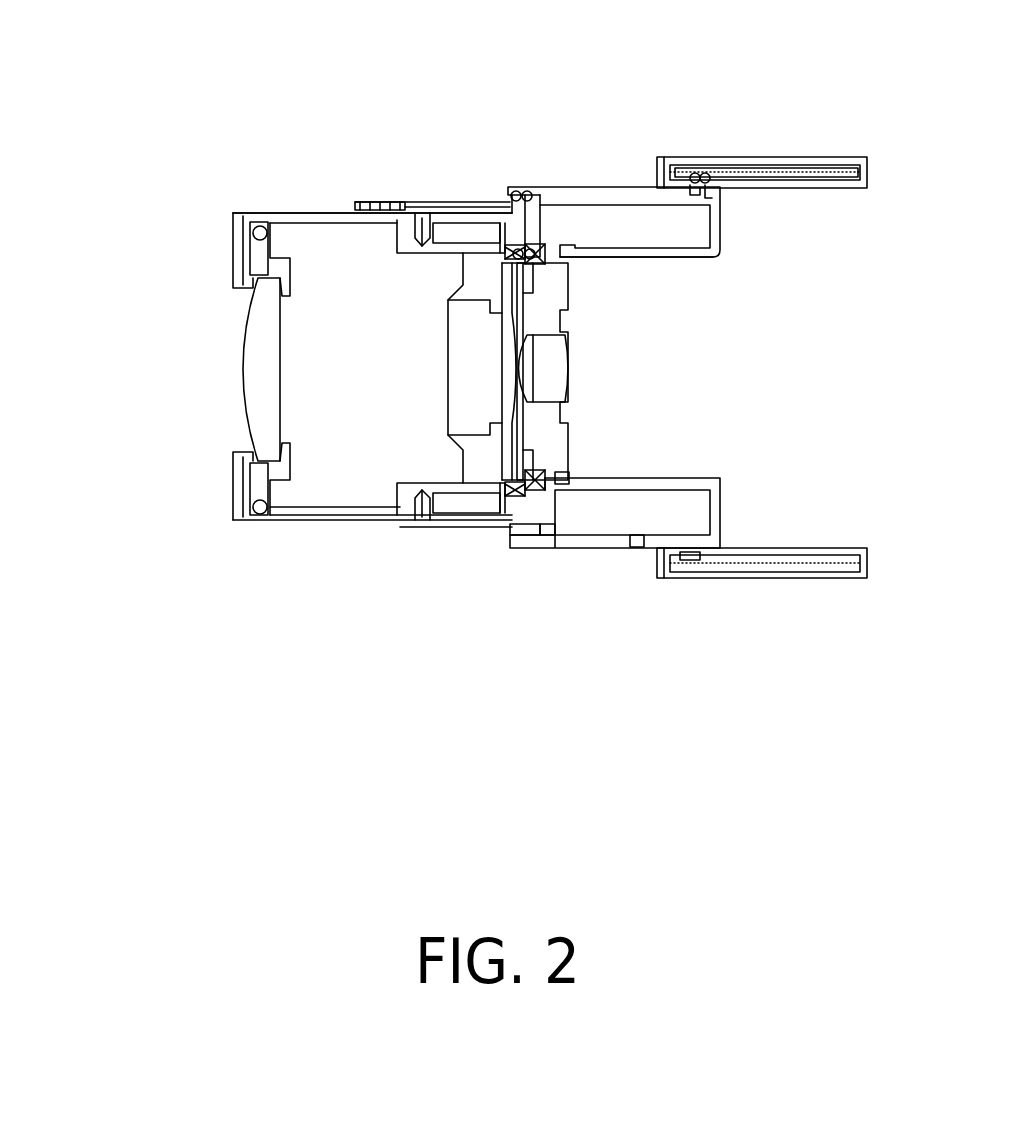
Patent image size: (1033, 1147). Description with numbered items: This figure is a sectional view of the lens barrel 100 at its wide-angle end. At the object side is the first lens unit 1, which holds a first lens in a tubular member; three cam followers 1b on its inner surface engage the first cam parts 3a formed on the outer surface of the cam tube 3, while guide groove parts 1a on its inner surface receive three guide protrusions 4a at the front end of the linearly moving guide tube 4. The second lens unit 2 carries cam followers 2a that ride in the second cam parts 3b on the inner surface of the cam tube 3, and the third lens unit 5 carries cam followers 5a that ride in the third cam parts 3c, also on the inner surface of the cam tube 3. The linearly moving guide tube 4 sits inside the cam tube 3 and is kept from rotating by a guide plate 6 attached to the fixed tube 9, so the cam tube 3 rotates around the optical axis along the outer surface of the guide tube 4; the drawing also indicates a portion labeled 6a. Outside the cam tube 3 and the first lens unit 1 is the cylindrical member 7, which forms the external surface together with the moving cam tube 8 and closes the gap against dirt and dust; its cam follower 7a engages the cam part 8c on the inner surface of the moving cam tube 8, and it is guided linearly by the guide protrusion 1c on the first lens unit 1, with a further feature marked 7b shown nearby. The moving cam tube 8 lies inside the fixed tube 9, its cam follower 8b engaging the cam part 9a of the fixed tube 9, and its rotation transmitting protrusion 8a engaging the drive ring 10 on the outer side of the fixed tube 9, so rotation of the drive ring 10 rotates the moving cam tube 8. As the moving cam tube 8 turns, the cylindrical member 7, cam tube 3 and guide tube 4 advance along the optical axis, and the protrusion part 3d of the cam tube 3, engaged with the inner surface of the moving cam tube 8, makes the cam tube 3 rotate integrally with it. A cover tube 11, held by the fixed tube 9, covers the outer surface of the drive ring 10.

The lens barrel 100 is at (137, 198).
The first lens unit 1 is at (263, 365).
The guide groove part 1a is at (305, 521).
The cam follower 1b is at (405, 530).
The guide protrusion 1c is at (393, 200).
The second lens unit 2 is at (325, 521).
The cam follower 2a is at (530, 197).
The cam tube 3 is at (457, 537).
The first cam part 3a is at (448, 520).
The second cam part 3b is at (517, 160).
The third cam part 3c is at (510, 523).
The protrusion part 3d is at (540, 210).
The linearly moving guide tube 4 is at (425, 252).
The guide protrusion 4a is at (393, 527).
The third lens unit 5 is at (560, 382).
The cam follower 5a is at (545, 466).
The guide plate 6 is at (720, 235).
The housing wall 6a is at (650, 257).
The cylindrical member 7 is at (355, 205).
The cam follower 7a is at (520, 552).
The adhesive 7b is at (395, 109).
The moving cam tube 8 is at (600, 190).
The rotation transmitting protrusion 8a is at (718, 173).
The cam follower 8b is at (672, 155).
The cam part 8c is at (538, 611).
The fixed tube 9 is at (827, 582).
The cam part 9a is at (706, 99).
The drive ring 10 is at (847, 163).
The cover tube 11 is at (657, 583).